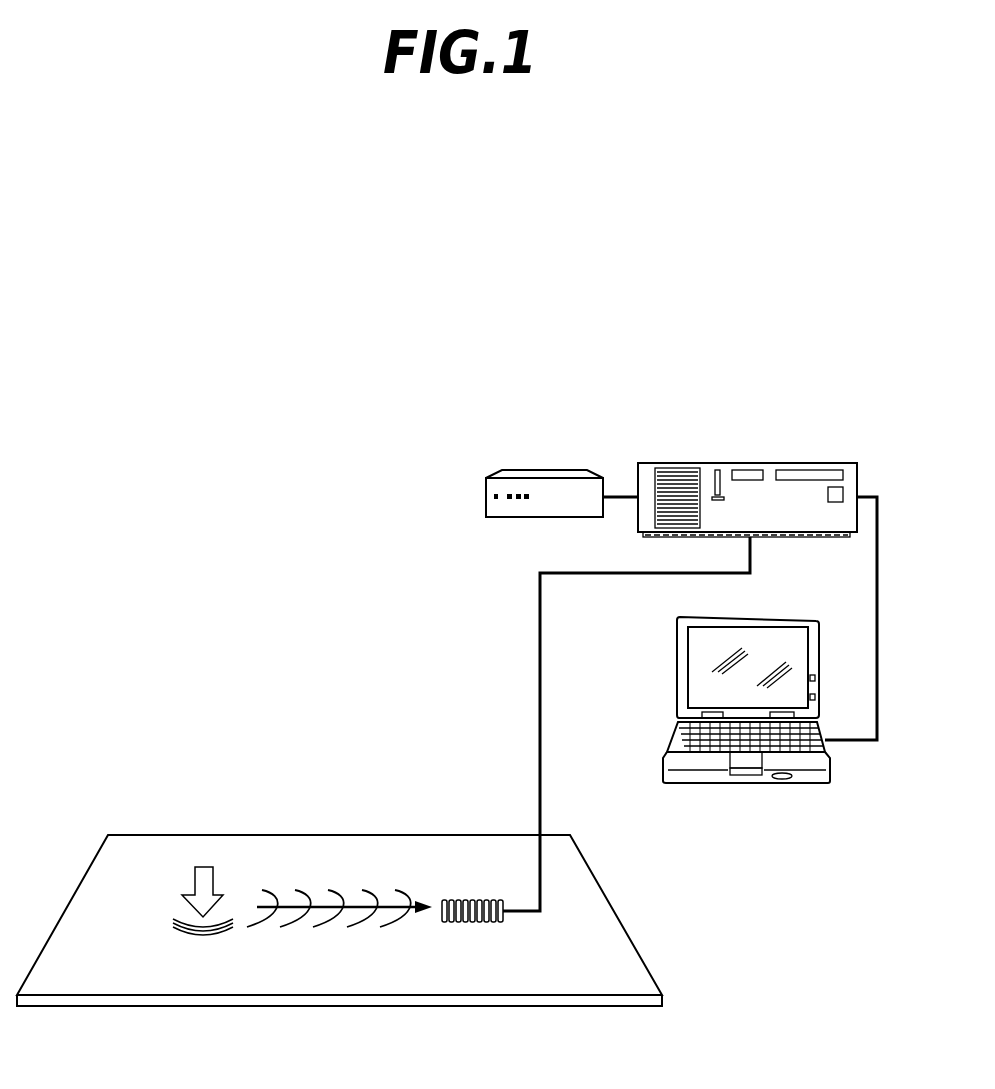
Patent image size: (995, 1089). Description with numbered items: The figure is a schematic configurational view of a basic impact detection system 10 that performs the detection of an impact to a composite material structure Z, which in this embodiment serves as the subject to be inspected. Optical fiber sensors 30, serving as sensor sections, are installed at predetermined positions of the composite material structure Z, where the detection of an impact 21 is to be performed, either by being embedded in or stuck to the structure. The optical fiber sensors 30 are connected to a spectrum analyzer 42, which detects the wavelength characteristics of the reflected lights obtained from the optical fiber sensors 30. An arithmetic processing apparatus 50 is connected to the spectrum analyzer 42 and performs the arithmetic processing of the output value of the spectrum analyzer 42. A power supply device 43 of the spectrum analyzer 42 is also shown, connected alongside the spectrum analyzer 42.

The impact detection system 10 is at (854, 290).
The impact 21 is at (205, 866).
The optical fiber sensors 30 is at (467, 900).
The spectrum analyzer 42 is at (773, 465).
The power supply device 43 is at (551, 477).
The arithmetic processing apparatus 50 is at (677, 670).
The composite material structure Z is at (548, 980).